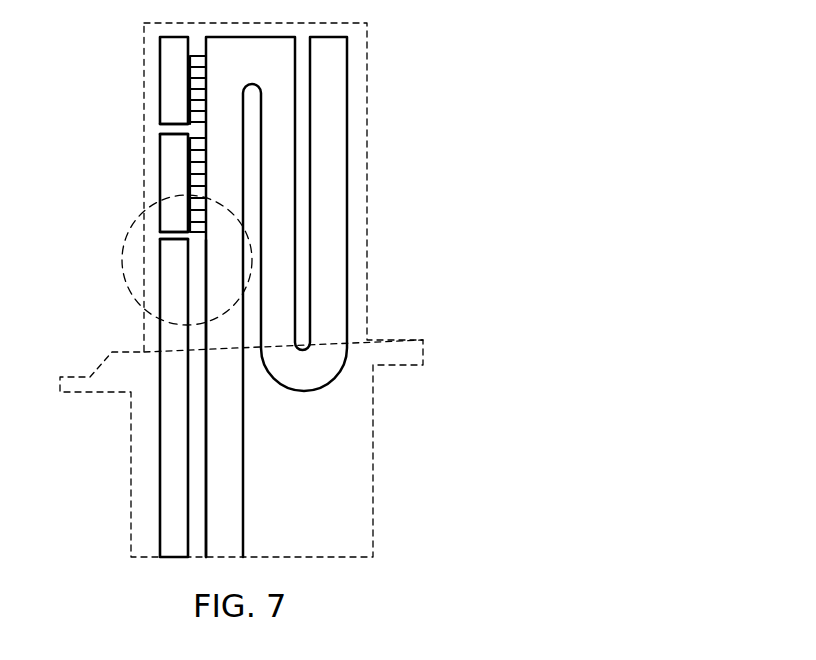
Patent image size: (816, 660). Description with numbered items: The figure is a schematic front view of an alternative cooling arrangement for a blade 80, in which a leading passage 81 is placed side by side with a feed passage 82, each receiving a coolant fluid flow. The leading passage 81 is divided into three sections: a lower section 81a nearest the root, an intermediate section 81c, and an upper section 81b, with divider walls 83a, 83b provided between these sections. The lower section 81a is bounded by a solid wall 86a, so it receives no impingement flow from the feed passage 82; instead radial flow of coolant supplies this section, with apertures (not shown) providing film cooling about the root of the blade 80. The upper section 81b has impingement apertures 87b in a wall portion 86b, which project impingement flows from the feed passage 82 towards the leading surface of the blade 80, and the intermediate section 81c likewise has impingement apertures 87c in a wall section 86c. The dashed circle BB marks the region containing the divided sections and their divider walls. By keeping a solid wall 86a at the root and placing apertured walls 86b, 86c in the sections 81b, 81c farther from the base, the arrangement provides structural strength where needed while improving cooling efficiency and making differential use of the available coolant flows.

The blade 80 is at (340, 482).
The leading passage 81 is at (110, 297).
The lower section 81a is at (172, 335).
The upper section 81b is at (175, 89).
The intermediate section 81c is at (176, 192).
The feed passage 82 is at (228, 170).
The divider wall 83a is at (163, 247).
The divider wall 83b is at (175, 138).
The solid wall 86a is at (198, 290).
The wall portion 86b is at (200, 77).
The wall section 86c is at (197, 188).
The impingement apertures 87b is at (207, 63).
The impingement apertures 87c is at (197, 145).
The detail view circle BB is at (122, 271).